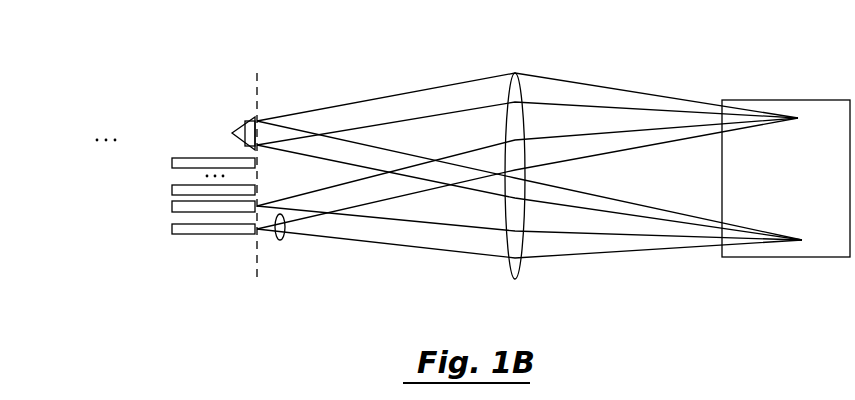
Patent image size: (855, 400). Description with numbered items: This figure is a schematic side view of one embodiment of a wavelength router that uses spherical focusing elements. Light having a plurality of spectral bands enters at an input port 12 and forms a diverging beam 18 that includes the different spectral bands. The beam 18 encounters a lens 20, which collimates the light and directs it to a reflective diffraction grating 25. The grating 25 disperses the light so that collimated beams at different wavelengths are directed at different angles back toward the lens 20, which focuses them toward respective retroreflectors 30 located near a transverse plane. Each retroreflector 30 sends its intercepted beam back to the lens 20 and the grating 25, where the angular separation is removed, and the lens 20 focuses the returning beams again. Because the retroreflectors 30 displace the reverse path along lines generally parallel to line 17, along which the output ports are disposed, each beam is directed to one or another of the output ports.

The input port 12 is at (259, 233).
The line 17 is at (257, 270).
The diverging beam 18 is at (287, 239).
The lens 20 is at (508, 257).
The reflective diffraction grating 25 is at (793, 99).
The retroreflector 30 is at (245, 122).